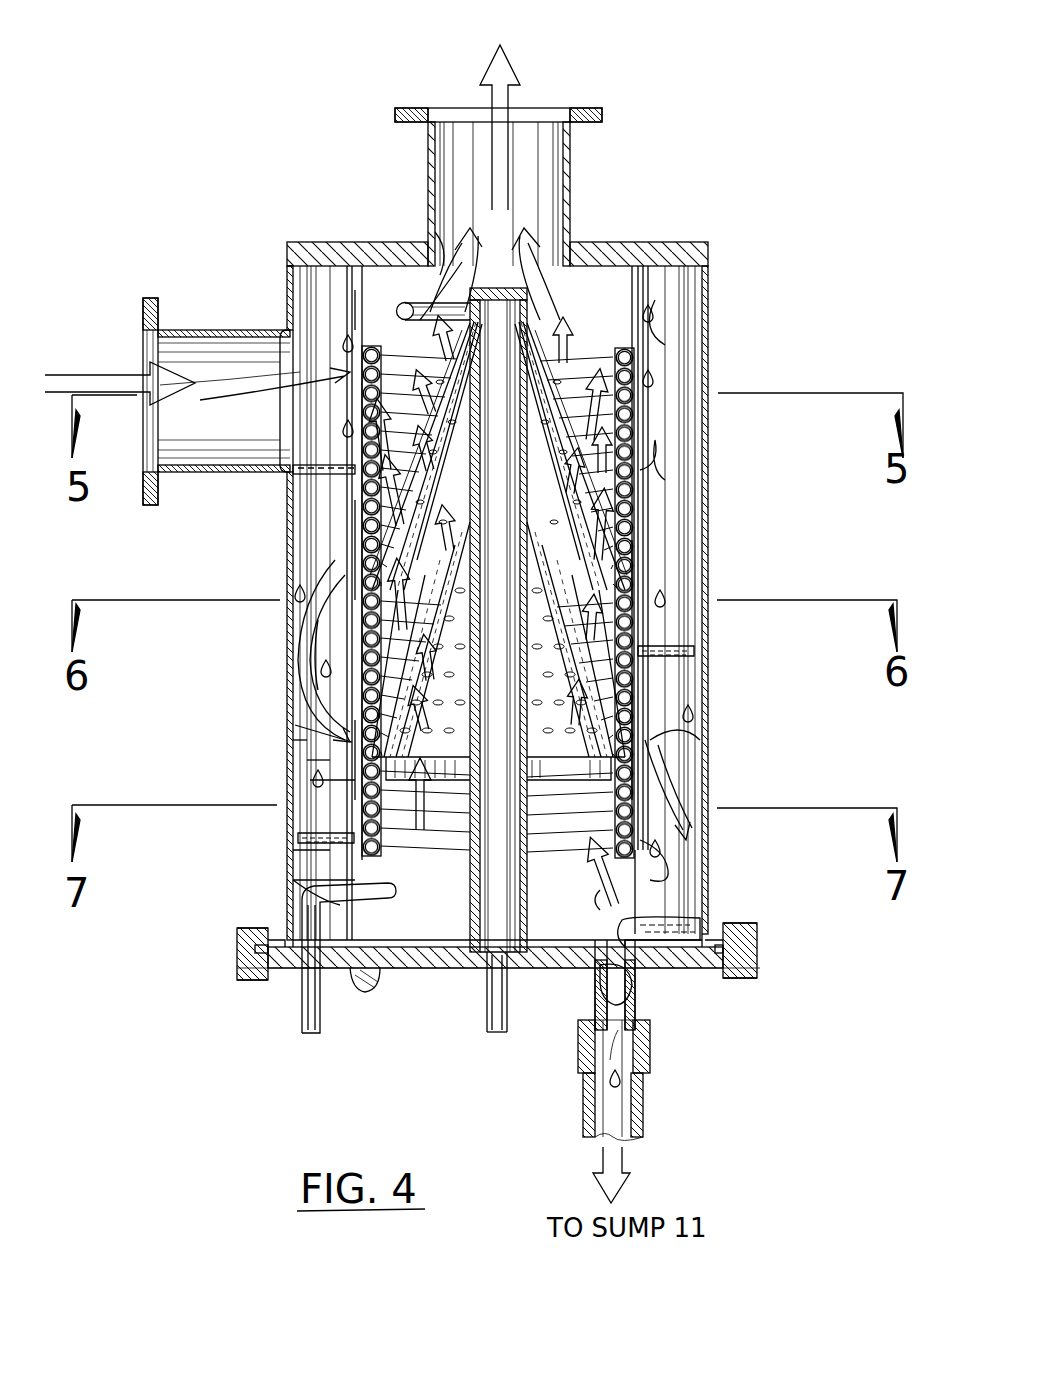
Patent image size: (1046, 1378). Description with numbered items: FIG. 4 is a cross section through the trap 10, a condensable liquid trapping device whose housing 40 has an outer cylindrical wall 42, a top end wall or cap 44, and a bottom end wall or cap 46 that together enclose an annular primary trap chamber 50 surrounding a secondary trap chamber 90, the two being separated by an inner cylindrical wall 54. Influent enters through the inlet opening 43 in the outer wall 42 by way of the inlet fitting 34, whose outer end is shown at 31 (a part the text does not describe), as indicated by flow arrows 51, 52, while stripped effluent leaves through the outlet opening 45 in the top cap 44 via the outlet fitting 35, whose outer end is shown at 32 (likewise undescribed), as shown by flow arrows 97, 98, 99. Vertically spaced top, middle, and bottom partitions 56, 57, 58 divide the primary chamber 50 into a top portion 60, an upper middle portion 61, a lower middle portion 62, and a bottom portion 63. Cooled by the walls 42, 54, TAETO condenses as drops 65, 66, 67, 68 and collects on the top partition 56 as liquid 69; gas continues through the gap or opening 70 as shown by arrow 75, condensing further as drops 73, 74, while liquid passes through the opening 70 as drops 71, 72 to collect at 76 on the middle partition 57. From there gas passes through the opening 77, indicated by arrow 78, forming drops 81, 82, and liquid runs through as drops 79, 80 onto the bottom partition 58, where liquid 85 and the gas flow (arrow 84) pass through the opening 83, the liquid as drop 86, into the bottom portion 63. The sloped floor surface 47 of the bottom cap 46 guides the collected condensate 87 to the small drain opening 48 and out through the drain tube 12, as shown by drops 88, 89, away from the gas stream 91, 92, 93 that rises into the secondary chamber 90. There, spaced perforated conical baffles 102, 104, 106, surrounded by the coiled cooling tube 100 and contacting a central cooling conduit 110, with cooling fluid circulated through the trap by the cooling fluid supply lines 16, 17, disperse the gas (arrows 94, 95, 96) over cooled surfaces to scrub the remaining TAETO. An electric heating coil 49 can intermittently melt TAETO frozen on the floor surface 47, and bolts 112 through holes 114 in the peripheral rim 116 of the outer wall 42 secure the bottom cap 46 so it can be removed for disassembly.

The trap 10 is at (224, 204).
The drain tube 12 is at (655, 1035).
The cooling fluid supply line 16 is at (300, 1025).
The cooling fluid supply line 17 is at (485, 1030).
The inlet flange 31 is at (150, 300).
The outlet flange 32 is at (395, 115).
The inlet fitting 34 is at (218, 330).
The outlet fitting 35 is at (428, 175).
The housing 40 is at (720, 290).
The outer cylindrical wall 42 is at (295, 745).
The inlet opening 43 is at (295, 440).
The top end wall or cap 44 is at (305, 243).
The outlet opening 45 is at (440, 228).
The bottom end wall or cap 46 is at (300, 1015).
The floor surface 47 is at (595, 968).
The drain opening 48 is at (605, 990).
The electric heating coil 49 is at (390, 1000).
The primary trap chamber 50 is at (338, 344).
The flow arrow 51 is at (100, 360).
The flow arrow 52 is at (282, 330).
The inner cylindrical wall 54 is at (300, 540).
The top partition 56 is at (300, 508).
The middle partition 57 is at (680, 668).
The bottom partition 58 is at (300, 855).
The top portion 60 is at (340, 438).
The upper middle portion 61 is at (344, 533).
The lower middle portion 62 is at (340, 765).
The bottom portion 63 is at (376, 928).
The drop 65 is at (292, 252).
The drop 66 is at (360, 468).
The drop 67 is at (655, 300).
The drop 68 is at (640, 385).
The condensed TAETO 69 is at (320, 472).
The gap or opening 70 is at (640, 468).
The drop 71 is at (660, 492).
The drop 72 is at (700, 620).
The drop 73 is at (300, 618).
The drop 74 is at (352, 570).
The arrow 75 is at (650, 540).
The condensed TAETO 76 is at (695, 648).
The gap or opening 77 is at (330, 645).
The arrow 78 is at (322, 690).
The drop 79 is at (312, 672).
The drop 80 is at (300, 785).
The drop 81 is at (695, 725).
The drop 82 is at (300, 765).
The gap or opening 83 is at (700, 845).
The arrow 84 is at (680, 800).
The condensed TAETO liquid 85 is at (300, 830).
The drop 86 is at (660, 862).
The TAETO condensate 87 is at (700, 920).
The drop 88 is at (640, 1000).
The drop 89 is at (625, 1090).
The secondary trap chamber 90 is at (616, 308).
The gas stream 91 is at (650, 890).
The gas stream 92 is at (385, 985).
The gas flow 93 is at (330, 726).
The flow arrow 94 is at (650, 695).
The flow arrow 95 is at (660, 520).
The flow arrow 96 is at (690, 415).
The flow arrow 97 is at (450, 218).
The flow arrow 98 is at (545, 218).
The flow arrow 99 is at (512, 90).
The coiled tube 100 is at (300, 882).
The perforated conical baffle 102 is at (650, 745).
The perforated conical baffle 104 is at (640, 575).
The perforated conical baffle 106 is at (650, 430).
The central cooling conduit 110 is at (470, 1000).
The bolts 112 is at (250, 985).
The holes 114 is at (250, 928).
The peripheral rim 116 is at (250, 950).